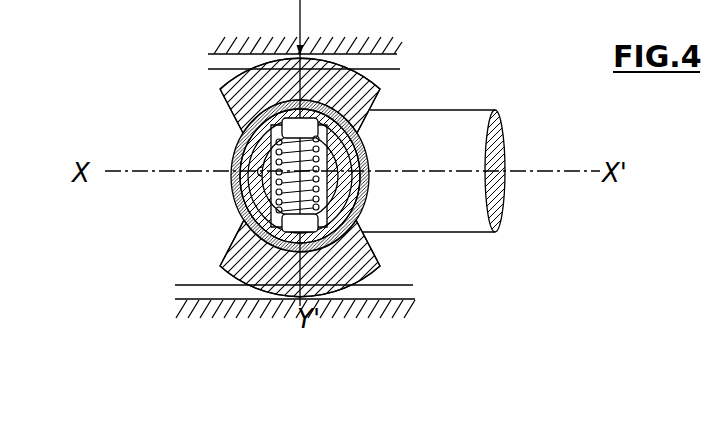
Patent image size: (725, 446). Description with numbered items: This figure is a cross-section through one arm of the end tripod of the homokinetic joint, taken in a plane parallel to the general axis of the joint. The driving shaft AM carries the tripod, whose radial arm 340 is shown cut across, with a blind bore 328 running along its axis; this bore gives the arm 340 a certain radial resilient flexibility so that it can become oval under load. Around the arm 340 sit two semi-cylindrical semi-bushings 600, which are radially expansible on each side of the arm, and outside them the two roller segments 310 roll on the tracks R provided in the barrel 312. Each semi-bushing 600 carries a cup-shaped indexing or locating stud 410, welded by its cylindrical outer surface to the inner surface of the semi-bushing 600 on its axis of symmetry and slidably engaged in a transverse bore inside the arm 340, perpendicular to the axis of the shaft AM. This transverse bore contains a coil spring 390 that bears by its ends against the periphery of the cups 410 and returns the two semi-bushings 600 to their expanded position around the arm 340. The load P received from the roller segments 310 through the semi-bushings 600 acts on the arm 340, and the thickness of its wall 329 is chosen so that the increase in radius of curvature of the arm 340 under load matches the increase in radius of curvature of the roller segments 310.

The barrel 312 is at (229, 47).
The roller segments 310 is at (352, 92).
The stud 410 is at (263, 103).
The wall 329 is at (242, 142).
The radial arm 340 is at (257, 171).
The blind bore 328 is at (250, 181).
The coil spring 390 is at (362, 183).
The semi-bushing 600 is at (369, 139).
The driving shaft AM is at (506, 134).
The load P is at (313, 29).
The tracks R is at (393, 63).